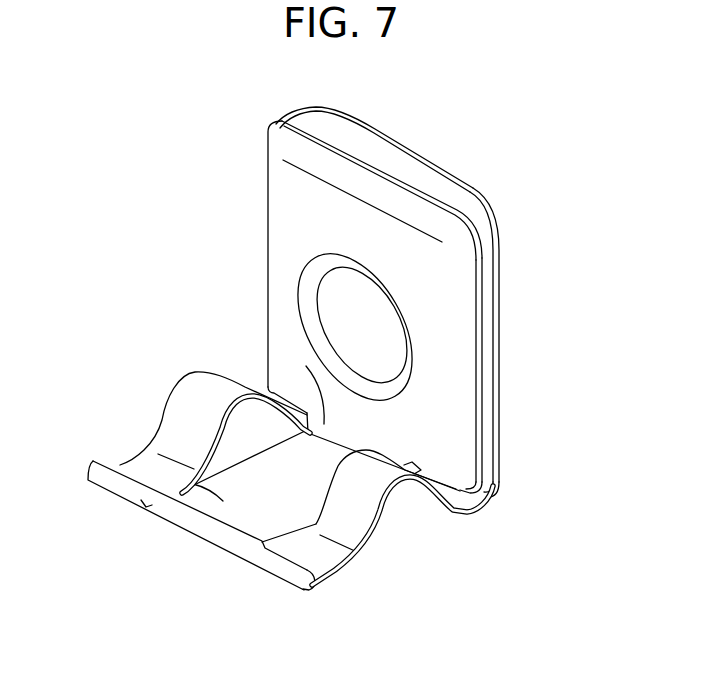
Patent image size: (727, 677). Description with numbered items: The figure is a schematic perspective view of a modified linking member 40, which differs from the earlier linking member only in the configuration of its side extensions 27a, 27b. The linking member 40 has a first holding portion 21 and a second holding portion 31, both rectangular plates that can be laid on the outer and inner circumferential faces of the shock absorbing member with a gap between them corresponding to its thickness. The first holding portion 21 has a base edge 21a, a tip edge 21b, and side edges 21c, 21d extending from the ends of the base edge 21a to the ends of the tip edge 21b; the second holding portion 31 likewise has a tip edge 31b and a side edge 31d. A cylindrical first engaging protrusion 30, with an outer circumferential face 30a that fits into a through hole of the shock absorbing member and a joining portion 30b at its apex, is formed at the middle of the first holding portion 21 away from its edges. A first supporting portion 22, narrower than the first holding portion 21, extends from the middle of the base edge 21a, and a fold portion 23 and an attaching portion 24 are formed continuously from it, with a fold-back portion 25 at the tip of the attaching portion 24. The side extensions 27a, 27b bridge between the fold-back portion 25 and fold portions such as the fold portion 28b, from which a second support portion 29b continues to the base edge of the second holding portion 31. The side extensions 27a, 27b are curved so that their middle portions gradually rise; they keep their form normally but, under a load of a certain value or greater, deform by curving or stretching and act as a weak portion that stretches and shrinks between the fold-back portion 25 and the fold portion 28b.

The linking member 40 is at (498, 158).
The second holding portion 31 is at (478, 212).
The tip edge 31b is at (366, 129).
The side edge 31d is at (498, 332).
The second support portion 29b is at (496, 477).
The first holding portion 21 is at (279, 235).
The base edge 21a is at (457, 490).
The tip edge 21b is at (403, 192).
The side edge 21c is at (267, 193).
The side edge 21d is at (486, 372).
The first engaging protrusion 30 is at (195, 276).
The outer circumferential face 30a is at (300, 297).
The joining portion 30b is at (342, 318).
The first supporting portion 22 is at (266, 379).
The fold portion 23 is at (312, 447).
The attaching portion 24 is at (121, 466).
The fold-back portion 25 is at (170, 503).
The side extension 27a is at (170, 417).
The side extension 27b is at (374, 543).
The fold portion 28b is at (481, 495).